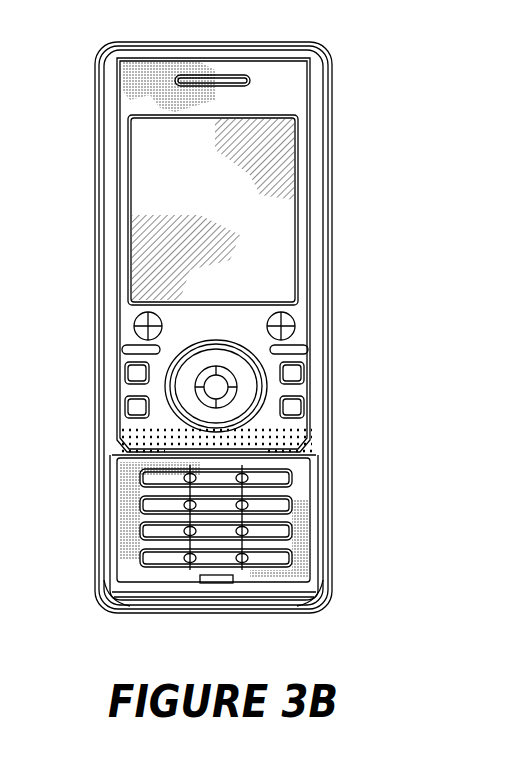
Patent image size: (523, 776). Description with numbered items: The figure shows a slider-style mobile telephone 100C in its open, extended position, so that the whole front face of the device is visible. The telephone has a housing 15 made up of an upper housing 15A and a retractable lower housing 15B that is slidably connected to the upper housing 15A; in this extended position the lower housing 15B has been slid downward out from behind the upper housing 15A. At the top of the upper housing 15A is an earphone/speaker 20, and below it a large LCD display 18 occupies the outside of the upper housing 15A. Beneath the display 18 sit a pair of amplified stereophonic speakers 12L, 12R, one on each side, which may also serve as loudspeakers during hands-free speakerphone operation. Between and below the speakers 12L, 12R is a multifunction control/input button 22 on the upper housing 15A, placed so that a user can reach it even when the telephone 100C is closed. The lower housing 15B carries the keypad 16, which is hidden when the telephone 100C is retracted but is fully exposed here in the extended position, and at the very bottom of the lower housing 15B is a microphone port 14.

The slider-style mobile telephone 100C is at (333, 249).
The housing 15 is at (320, 156).
The upper housing 15A is at (316, 204).
The retractable lower housing 15B is at (322, 512).
The earphone/speaker 20 is at (222, 74).
The LCD display 18 is at (152, 189).
The amplified stereophonic speaker 12L is at (135, 326).
The amplified stereophonic speaker 12R is at (295, 326).
The multifunction control/input button 22 is at (188, 384).
The keypad 16 is at (150, 532).
The microphone port 14 is at (212, 584).